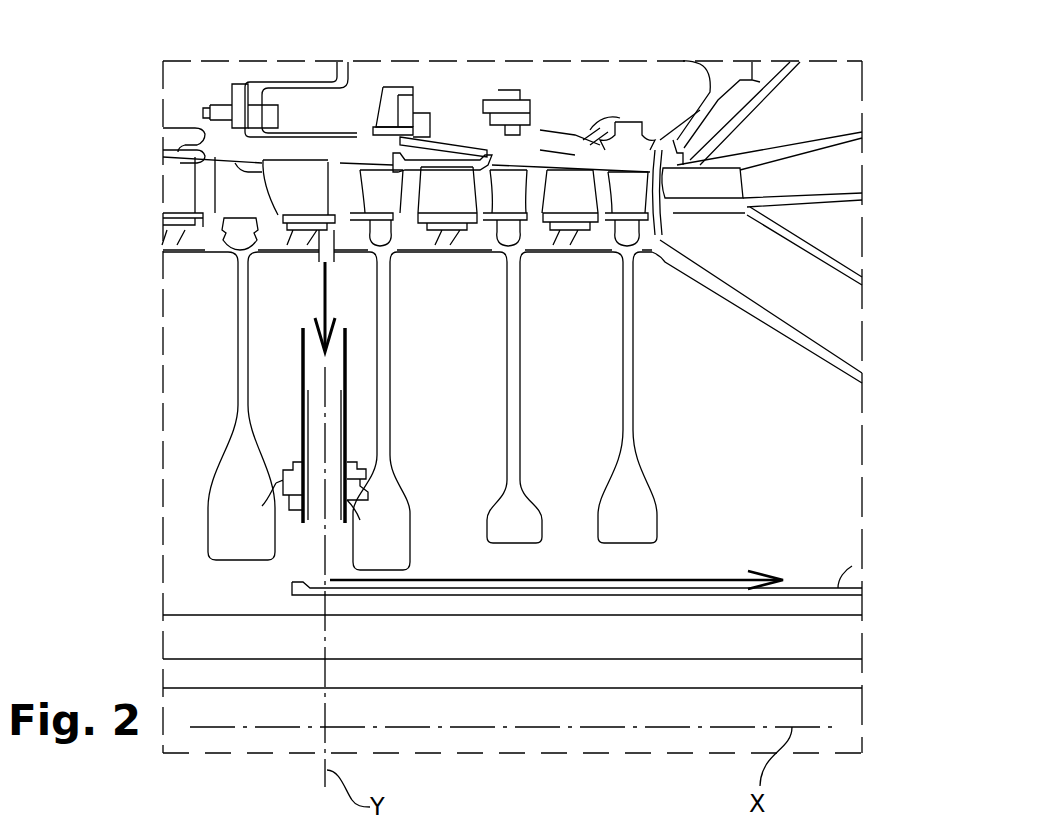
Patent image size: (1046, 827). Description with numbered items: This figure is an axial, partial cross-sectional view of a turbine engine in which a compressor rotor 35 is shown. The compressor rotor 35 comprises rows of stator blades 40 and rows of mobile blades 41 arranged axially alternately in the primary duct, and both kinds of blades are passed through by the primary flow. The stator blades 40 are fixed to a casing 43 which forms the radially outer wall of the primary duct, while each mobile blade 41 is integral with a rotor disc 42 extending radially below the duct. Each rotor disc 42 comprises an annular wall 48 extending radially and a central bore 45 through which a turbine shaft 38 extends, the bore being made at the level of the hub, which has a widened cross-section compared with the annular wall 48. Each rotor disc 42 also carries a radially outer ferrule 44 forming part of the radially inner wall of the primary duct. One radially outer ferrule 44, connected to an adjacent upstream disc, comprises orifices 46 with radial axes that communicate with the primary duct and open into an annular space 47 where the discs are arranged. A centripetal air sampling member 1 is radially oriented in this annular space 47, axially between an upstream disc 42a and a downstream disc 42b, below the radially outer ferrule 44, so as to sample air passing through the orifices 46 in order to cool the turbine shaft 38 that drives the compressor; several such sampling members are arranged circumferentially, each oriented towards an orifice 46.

The centripetal air sampling member 1 is at (280, 412).
The compressor rotor 35 is at (292, 58).
The turbine shaft 38 is at (852, 566).
The stator blades 40 is at (443, 190).
The mobile blades 41 is at (380, 188).
The rotor disc 42 is at (648, 388).
The upstream disc 42a is at (231, 530).
The downstream disc 42b is at (387, 557).
The casing 43 is at (628, 137).
The radially outer ferrule 44 is at (468, 253).
The central bore 45 is at (640, 545).
The orifices 46 is at (313, 272).
The annular space 47 is at (276, 328).
The annular wall 48 is at (387, 397).